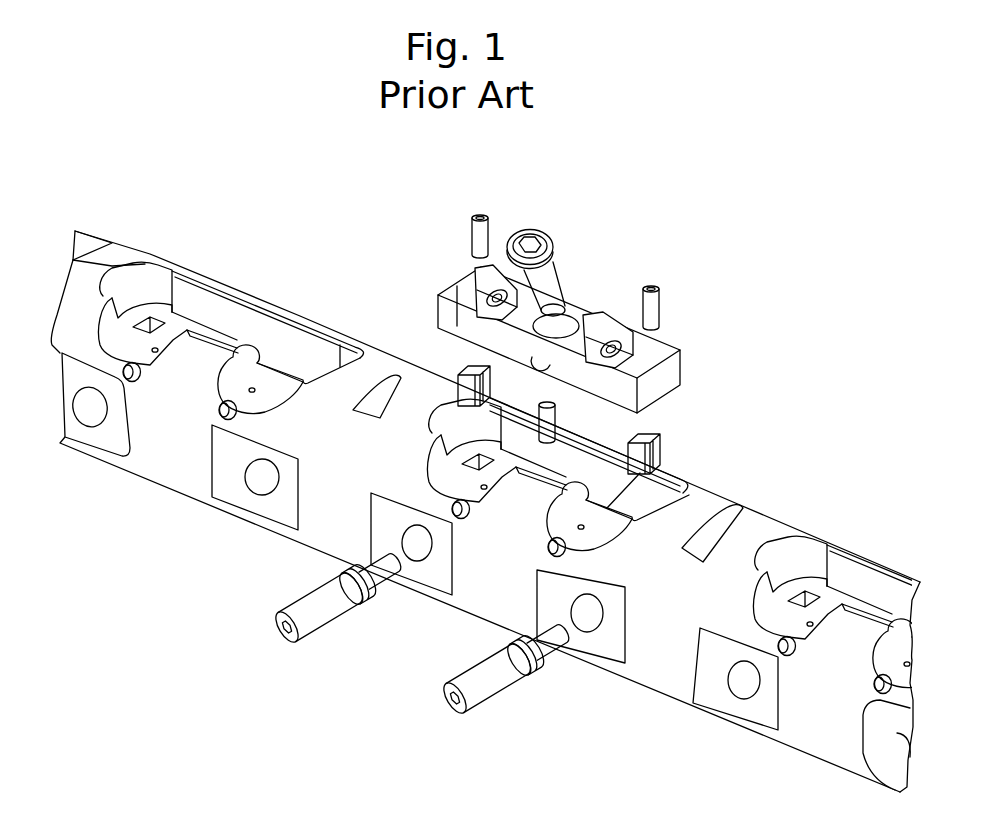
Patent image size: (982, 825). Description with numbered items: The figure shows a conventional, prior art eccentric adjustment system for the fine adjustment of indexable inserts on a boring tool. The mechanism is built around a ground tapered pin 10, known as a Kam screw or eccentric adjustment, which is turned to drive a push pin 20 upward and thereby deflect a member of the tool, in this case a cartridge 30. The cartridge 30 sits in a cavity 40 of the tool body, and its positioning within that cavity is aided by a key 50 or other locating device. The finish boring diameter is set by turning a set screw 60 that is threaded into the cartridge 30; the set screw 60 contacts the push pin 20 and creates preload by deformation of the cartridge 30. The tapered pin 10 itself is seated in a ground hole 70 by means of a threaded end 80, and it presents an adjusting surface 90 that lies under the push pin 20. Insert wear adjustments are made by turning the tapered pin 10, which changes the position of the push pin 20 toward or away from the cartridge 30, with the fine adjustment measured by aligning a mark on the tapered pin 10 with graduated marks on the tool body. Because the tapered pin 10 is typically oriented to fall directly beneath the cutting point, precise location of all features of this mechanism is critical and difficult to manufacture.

The tapered pin 10 is at (268, 630).
The push pin 20 is at (463, 365).
The cartridge 30 is at (680, 352).
The cavity 40 is at (660, 467).
The key 50 is at (556, 421).
The set screw 60 is at (470, 240).
The ground hole 70 is at (420, 546).
The threaded end 80 is at (382, 553).
The adjusting surface 90 is at (368, 588).